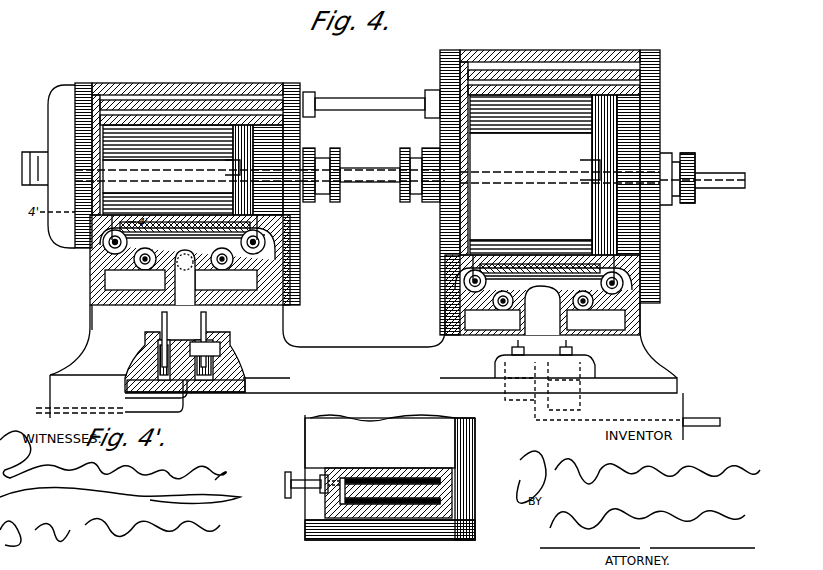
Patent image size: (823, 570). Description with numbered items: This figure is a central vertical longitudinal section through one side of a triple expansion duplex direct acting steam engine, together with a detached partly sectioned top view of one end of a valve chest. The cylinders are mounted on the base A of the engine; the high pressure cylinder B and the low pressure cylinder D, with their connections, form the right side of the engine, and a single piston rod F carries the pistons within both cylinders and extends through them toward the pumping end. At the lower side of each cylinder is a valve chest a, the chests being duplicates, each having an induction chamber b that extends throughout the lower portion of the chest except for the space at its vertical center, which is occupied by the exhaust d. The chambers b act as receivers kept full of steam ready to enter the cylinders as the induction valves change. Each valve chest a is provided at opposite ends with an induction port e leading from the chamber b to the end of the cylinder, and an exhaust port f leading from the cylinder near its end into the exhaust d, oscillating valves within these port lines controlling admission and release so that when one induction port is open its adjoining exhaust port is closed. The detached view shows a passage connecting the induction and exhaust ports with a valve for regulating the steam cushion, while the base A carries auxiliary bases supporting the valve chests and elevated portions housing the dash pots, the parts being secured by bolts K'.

In FIG. 4, the high pressure cylinder B is at (161, 185).
In FIG. 4, the low pressure cylinder D is at (581, 192).
In FIG. 4, the piston rod F is at (360, 176).
In FIG. 4, the base A is at (366, 372).
In FIG. 4, the valve chest a is at (287, 292).
In FIG. 4', the valve chest a is at (380, 443).
In FIG. 4, the induction chamber b is at (365, 300).
In FIG. 4, the exhaust d is at (367, 292).
In FIG. 4, the induction port e is at (96, 260).
In FIG. 4', the induction port e is at (395, 520).
In FIG. 4, the exhaust port f is at (116, 228).
In FIG. 4', the exhaust port f is at (414, 470).
In FIG. 4, the fastening bolt K' is at (373, 337).